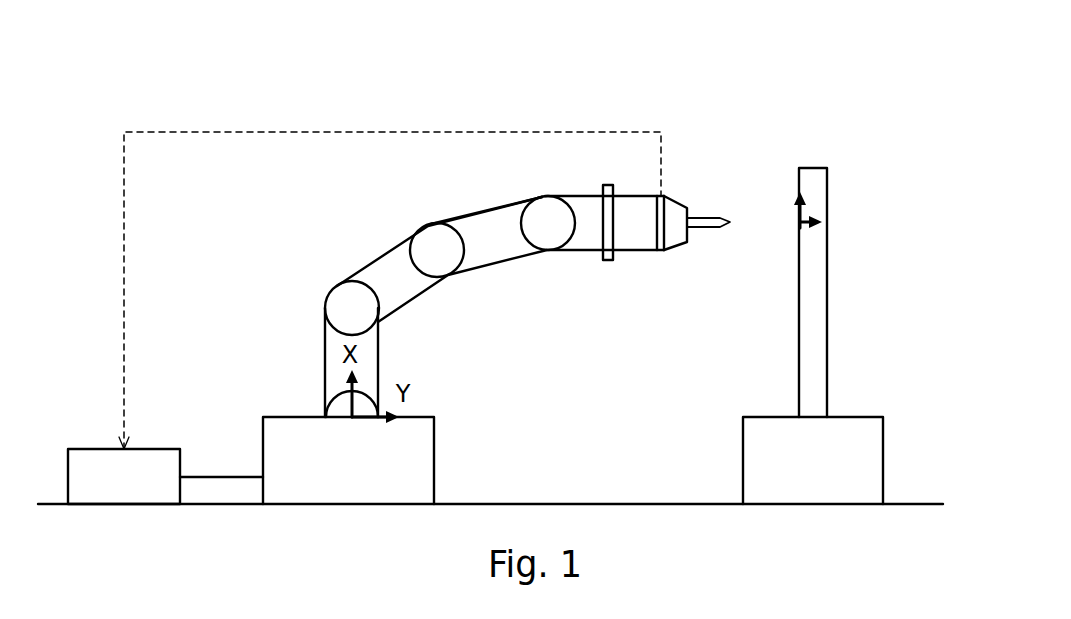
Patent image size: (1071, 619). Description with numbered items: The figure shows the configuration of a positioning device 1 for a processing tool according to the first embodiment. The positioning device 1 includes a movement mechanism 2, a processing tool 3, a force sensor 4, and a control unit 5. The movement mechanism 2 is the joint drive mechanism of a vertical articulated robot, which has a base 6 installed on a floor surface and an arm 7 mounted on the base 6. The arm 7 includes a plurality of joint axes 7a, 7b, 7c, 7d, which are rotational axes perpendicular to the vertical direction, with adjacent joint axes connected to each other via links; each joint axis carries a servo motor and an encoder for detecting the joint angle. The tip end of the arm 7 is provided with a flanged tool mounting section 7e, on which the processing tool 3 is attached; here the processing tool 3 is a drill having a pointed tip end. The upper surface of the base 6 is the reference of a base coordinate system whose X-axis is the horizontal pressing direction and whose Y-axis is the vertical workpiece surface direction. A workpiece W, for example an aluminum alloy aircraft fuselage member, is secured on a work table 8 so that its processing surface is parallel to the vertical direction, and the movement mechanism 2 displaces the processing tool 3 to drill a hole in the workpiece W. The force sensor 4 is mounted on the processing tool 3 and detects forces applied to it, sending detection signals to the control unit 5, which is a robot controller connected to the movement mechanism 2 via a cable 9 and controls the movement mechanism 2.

The positioning device 1 is at (318, 108).
The movement mechanism 2 is at (466, 207).
The processing tool 3 is at (637, 234).
The force sensor 4 is at (660, 252).
The control unit 5 is at (153, 449).
The base 6 is at (435, 457).
The arm 7 is at (420, 278).
The joint axis 7a is at (325, 415).
The joint axis 7b is at (329, 293).
The joint axis 7c is at (420, 227).
The joint axis 7d is at (545, 196).
The flanged tool mounting section 7e is at (607, 262).
The work table 8 is at (884, 460).
The cable 9 is at (218, 477).
The workpiece W is at (812, 168).